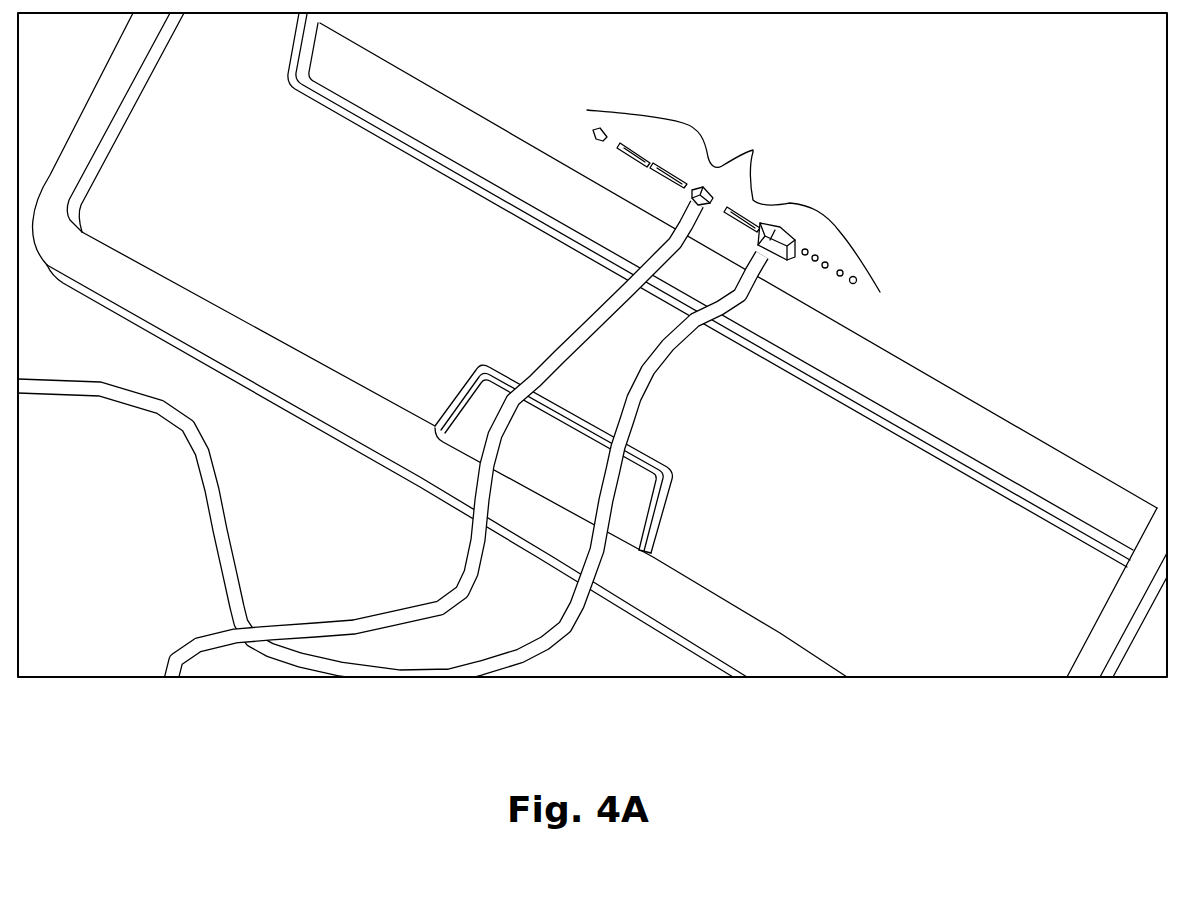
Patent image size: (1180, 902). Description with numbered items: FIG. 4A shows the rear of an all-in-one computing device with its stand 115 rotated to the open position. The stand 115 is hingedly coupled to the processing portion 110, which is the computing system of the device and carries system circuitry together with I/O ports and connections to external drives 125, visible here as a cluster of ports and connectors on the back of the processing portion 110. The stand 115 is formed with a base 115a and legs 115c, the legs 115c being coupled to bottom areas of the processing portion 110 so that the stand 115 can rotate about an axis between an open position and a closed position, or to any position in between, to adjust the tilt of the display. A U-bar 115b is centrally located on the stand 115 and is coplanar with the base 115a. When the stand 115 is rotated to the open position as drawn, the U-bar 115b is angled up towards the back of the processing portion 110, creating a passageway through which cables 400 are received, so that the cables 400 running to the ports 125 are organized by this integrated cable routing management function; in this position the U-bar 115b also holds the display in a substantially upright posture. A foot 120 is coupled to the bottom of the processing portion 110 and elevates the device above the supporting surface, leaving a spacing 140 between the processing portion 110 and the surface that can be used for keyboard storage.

The processing portion 110 is at (1022, 380).
The stand 115 is at (733, 605).
The base 115a is at (270, 357).
The U-bar 115b is at (478, 368).
The legs 115c is at (128, 103).
The foot 120 is at (292, 64).
The I/O ports and connections to external drives 125 is at (753, 150).
The spacing 140 is at (410, 120).
The cables 400 is at (327, 617).